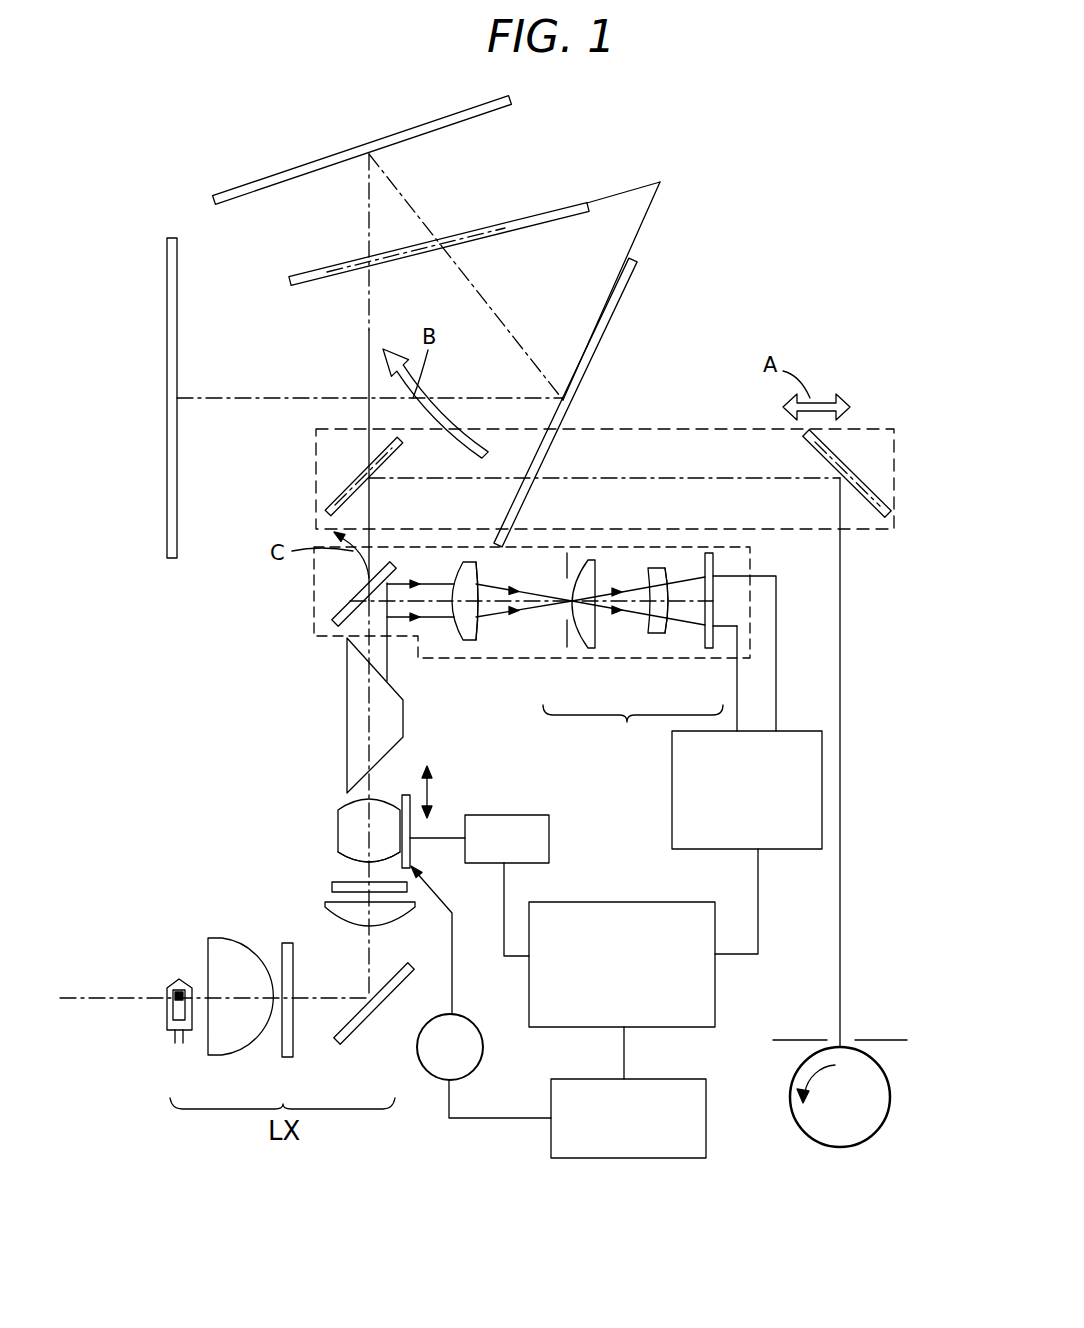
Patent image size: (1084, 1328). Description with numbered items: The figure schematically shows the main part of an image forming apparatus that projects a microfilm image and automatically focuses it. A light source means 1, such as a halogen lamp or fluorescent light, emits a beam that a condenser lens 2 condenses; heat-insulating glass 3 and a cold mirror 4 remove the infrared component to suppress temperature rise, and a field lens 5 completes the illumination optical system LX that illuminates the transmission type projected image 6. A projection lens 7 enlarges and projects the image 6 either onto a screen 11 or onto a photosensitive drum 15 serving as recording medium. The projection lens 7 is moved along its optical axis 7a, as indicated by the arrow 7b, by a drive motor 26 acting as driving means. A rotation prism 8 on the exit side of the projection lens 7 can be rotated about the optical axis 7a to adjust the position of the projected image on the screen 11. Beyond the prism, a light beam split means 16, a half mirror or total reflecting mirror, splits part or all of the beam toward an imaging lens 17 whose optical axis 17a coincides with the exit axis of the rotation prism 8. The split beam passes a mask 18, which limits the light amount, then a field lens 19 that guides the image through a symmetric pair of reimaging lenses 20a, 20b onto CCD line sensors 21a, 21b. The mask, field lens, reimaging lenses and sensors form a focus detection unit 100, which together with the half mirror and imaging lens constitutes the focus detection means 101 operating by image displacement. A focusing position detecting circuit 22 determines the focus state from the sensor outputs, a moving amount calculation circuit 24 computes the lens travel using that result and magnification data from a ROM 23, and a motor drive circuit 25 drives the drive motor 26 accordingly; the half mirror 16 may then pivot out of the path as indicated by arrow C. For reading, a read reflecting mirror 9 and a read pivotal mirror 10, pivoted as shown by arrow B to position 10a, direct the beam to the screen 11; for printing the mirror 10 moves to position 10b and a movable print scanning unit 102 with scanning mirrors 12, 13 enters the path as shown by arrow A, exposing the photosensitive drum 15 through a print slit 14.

The light source means 1 is at (175, 982).
The condenser lens 2 is at (222, 940).
The heat-insulating glass 3 is at (287, 943).
The cold mirror 4 is at (373, 1013).
The field lens 5 is at (326, 906).
The projected image 6 is at (332, 884).
The projection lens 7 is at (338, 823).
The optical axis 7a is at (368, 869).
The arrow 7b is at (433, 793).
The rotation prism 8 is at (404, 714).
The read reflecting mirror 9 is at (513, 99).
The read pivotal mirror 10 is at (498, 329).
The reading position 10a is at (640, 265).
The printing position 10b is at (567, 201).
The screen 11 is at (172, 236).
The scanning mirror 12 is at (327, 497).
The scanning mirror 13 is at (850, 465).
The print slit 14 is at (898, 1042).
The photosensitive drum 15 is at (889, 1101).
The light beam split means 16 is at (340, 614).
The imaging lens 17 is at (470, 641).
The optical axis 17a is at (497, 607).
The mask 18 is at (566, 649).
The field lens 19 is at (590, 649).
The reimaging lens 20a is at (668, 592).
The reimaging lens 20b is at (651, 634).
The line sensor 21a is at (713, 560).
The line sensor 21b is at (715, 610).
The focusing position detecting circuit 22 is at (790, 731).
The ROM 23 is at (517, 815).
The moving amount calculation circuit 24 is at (678, 903).
The motor drive circuit 25 is at (679, 1079).
The drive motor 26 is at (466, 1026).
The focus detection unit 100 is at (633, 726).
The focus detection means 101 is at (750, 640).
The movable print scanning unit 102 is at (620, 430).